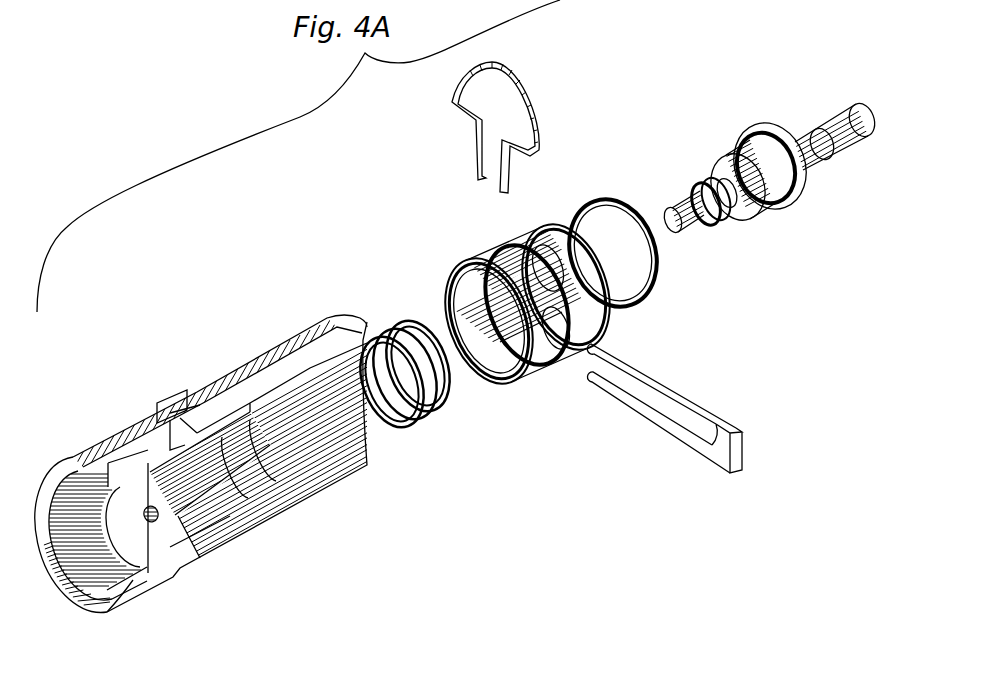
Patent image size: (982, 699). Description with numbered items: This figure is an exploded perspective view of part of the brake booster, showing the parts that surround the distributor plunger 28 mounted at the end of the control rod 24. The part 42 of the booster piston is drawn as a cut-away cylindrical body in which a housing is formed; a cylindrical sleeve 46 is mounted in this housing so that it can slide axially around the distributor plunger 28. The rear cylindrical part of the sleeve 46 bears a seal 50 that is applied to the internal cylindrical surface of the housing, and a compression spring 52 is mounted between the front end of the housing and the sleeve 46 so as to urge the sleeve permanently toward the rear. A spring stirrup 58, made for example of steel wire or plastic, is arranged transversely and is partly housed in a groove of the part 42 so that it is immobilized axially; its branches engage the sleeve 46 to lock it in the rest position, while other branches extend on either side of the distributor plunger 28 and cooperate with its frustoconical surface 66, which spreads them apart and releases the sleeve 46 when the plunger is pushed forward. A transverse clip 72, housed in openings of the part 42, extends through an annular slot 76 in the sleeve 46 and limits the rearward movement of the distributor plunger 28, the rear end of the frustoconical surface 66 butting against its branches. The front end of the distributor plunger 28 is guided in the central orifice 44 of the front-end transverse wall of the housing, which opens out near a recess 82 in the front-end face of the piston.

The control rod 24 is at (830, 105).
The distributor plunger 28 is at (740, 218).
The part of the booster piston 42 is at (107, 438).
The central orifice 44 is at (160, 518).
The cylindrical sleeve 46 is at (484, 257).
The seal 50 is at (598, 200).
The compression spring 52 is at (405, 322).
The spring stirrup 58 is at (520, 80).
The frustoconical surface 66 is at (700, 180).
The transverse clip 72 is at (693, 402).
The annular slot 76 is at (527, 367).
The recess 82 is at (133, 580).